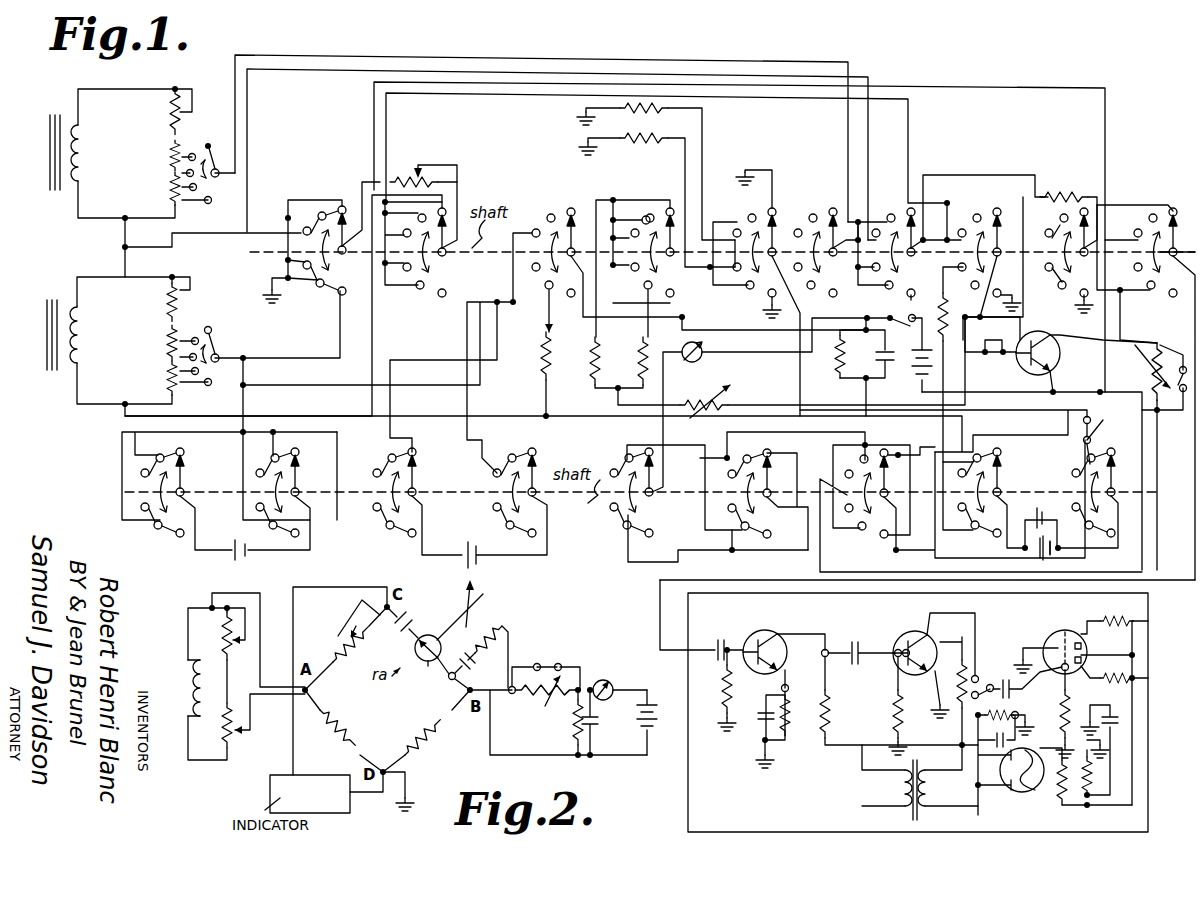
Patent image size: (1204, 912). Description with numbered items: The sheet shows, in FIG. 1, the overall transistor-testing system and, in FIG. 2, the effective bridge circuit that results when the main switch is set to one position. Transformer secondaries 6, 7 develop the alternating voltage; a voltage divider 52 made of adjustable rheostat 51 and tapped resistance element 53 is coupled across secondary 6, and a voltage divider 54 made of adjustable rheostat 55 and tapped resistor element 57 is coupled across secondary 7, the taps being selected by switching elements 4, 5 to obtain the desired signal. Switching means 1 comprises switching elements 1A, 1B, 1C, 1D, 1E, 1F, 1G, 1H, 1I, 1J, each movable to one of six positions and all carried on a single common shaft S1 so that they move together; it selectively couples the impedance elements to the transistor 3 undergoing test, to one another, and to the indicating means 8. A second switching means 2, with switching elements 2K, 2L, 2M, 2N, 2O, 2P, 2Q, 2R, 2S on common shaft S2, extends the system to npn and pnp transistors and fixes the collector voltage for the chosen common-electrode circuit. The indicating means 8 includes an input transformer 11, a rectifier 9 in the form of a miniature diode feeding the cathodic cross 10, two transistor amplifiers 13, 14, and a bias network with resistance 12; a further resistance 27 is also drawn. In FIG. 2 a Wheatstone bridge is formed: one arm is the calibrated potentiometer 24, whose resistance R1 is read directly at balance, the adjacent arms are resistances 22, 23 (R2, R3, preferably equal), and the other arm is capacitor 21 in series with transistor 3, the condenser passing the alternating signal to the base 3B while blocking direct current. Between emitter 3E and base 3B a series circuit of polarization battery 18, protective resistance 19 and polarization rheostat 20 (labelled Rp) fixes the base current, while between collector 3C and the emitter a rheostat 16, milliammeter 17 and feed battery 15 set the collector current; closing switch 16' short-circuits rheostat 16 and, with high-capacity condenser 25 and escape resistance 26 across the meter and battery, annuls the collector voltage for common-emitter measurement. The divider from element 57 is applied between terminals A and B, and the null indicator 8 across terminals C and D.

In FIG. 1, the switching means 1 is at (1193, 258).
In FIG. 1, the switching element 1A is at (330, 180).
In FIG. 1, the switching element 1B is at (470, 195).
In FIG. 1, the switching element 1C is at (568, 198).
In FIG. 1, the switching element 1D is at (672, 196).
In FIG. 1, the switching element 1E is at (792, 212).
In FIG. 1, the switching element 1F is at (836, 208).
In FIG. 1, the switching element 1G is at (900, 208).
In FIG. 1, the switching element 1H is at (1012, 210).
In FIG. 1, the switching element 1I is at (1086, 192).
In FIG. 1, the switching element 1J is at (1200, 210).
In FIG. 1, the switching means 2 is at (1160, 492).
In FIG. 1, the switching element 2K is at (192, 475).
In FIG. 1, the switching element 2L is at (308, 470).
In FIG. 1, the switching element 2M is at (428, 485).
In FIG. 1, the switching element 2N is at (544, 470).
In FIG. 1, the switching element 2O is at (636, 470).
In FIG. 1, the switching element 2P is at (795, 475).
In FIG. 1, the switching element 2Q is at (938, 548).
In FIG. 1, the switching element 2R is at (1008, 480).
In FIG. 1, the switching element 2S is at (1123, 458).
In FIG. 1, the transistor 3 is at (1036, 333).
In FIG. 2, the transistor 3 is at (428, 633).
In FIG. 1, the switching element 4 is at (205, 120).
In FIG. 1, the switching element 5 is at (208, 296).
In FIG. 2, the switching element 5 is at (245, 665).
In FIG. 1, the transformer secondary 6 is at (70, 212).
In FIG. 1, the transformer secondary 7 is at (62, 286).
In FIG. 2, the transformer secondary 7 is at (185, 622).
In FIG. 2, the indicating means 8 is at (1176, 647).
In FIG. 2, the rectifier 9 is at (1018, 790).
In FIG. 2, the cathodic cross 10 is at (1058, 628).
In FIG. 2, the input transformer 11 is at (915, 758).
In FIG. 2, the resistance 12 is at (1010, 712).
In FIG. 2, the transistor amplifier 13 is at (903, 636).
In FIG. 2, the transistor amplifier 14 is at (758, 628).
In FIG. 1, the feed battery 15 is at (905, 368).
In FIG. 2, the feed battery 15 is at (652, 710).
In FIG. 2, the rheostat 16 is at (542, 700).
In FIG. 2, the switch 16' is at (552, 657).
In FIG. 2, the milliammeter 17 is at (605, 680).
In FIG. 1, the battery 18 is at (1048, 534).
In FIG. 2, the battery 18 is at (470, 670).
In FIG. 2, the protective resistance 19 is at (498, 622).
In FIG. 2, the polarization rheostat 20 is at (478, 600).
In FIG. 2, the capacitor 21 is at (408, 602).
In FIG. 1, the resistance 22 is at (652, 112).
In FIG. 2, the resistance 22 is at (348, 724).
In FIG. 2, the resistance 23 is at (440, 733).
In FIG. 1, the calibrated potentiometer 24 is at (420, 165).
In FIG. 2, the calibrated potentiometer 24 is at (352, 626).
In FIG. 2, the condenser 25 is at (596, 727).
In FIG. 2, the escape resistance 26 is at (574, 720).
In FIG. 1, the resistor 27 is at (643, 148).
In FIG. 1, the adjustable rheostat 51 is at (178, 112).
In FIG. 1, the voltage divider 52 is at (170, 154).
In FIG. 1, the tapped resistance element 53 is at (172, 183).
In FIG. 1, the voltage divider 54 is at (162, 345).
In FIG. 1, the adjustable rheostat 55 is at (172, 300).
In FIG. 1, the tapped resistor element 57 is at (168, 362).
In FIG. 2, the tapped resistor element 57 is at (235, 748).
In FIG. 1, the shaft S1 is at (1165, 300).
In FIG. 1, the shaft S2 is at (1152, 500).
In FIG. 2, the bridge resistance R1 is at (316, 628).
In FIG. 2, the bridge resistance R2 is at (328, 761).
In FIG. 2, the bridge resistance R3 is at (435, 750).
In FIG. 2, the rheostat Rp is at (505, 595).
In FIG. 2, the base 3B is at (388, 650).
In FIG. 2, the collector 3C is at (443, 642).
In FIG. 2, the emitter 3E is at (445, 676).